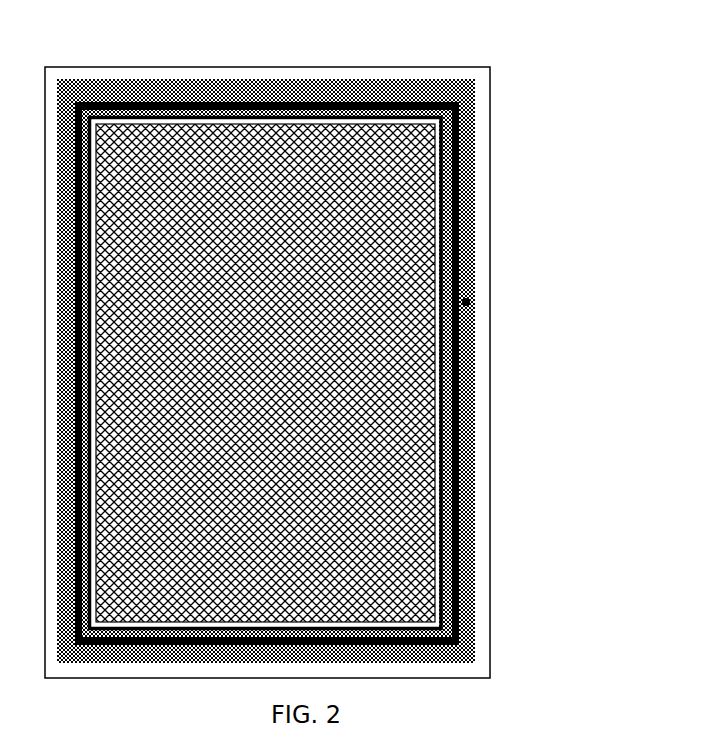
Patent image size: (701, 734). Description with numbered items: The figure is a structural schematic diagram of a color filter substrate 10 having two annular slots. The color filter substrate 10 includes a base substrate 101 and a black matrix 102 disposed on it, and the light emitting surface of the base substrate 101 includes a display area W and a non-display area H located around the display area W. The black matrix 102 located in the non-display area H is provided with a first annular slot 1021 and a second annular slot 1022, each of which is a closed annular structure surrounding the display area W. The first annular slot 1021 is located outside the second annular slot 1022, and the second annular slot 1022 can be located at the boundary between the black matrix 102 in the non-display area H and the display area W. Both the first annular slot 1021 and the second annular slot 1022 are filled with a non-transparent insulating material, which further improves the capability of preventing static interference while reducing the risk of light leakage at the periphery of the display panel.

The color filter substrate 10 is at (67, 52).
The base substrate 101 is at (316, 346).
The black matrix 102 is at (478, 136).
The first annular slot 1021 is at (459, 372).
The second annular slot 1022 is at (453, 413).
The display area W is at (335, 251).
The non-display area H is at (466, 302).